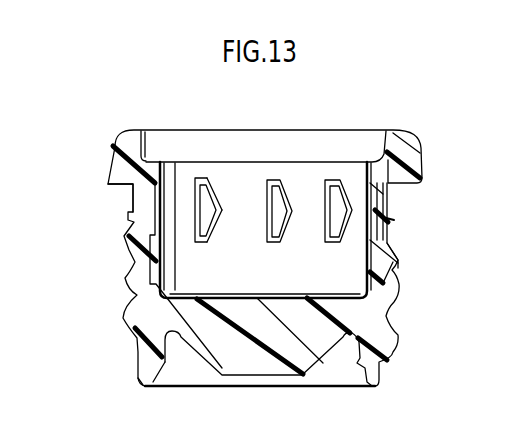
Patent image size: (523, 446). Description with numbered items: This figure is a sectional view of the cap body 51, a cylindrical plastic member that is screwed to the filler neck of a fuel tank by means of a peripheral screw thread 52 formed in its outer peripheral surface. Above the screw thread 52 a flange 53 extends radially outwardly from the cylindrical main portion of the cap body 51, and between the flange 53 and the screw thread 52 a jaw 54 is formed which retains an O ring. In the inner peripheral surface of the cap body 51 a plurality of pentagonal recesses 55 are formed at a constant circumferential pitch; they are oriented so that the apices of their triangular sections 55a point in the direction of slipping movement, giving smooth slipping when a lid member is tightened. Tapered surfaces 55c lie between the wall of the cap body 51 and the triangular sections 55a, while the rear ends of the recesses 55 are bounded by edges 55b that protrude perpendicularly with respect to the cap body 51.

The cap body 51 is at (125, 257).
The screw thread 52 is at (395, 265).
The flange 53 is at (121, 142).
The jaw 54 is at (130, 186).
The pentagonal recesses 55 is at (265, 192).
The triangular sections 55a is at (205, 217).
The side bar of window 55b is at (196, 186).
The tapered surfaces 55c is at (217, 200).